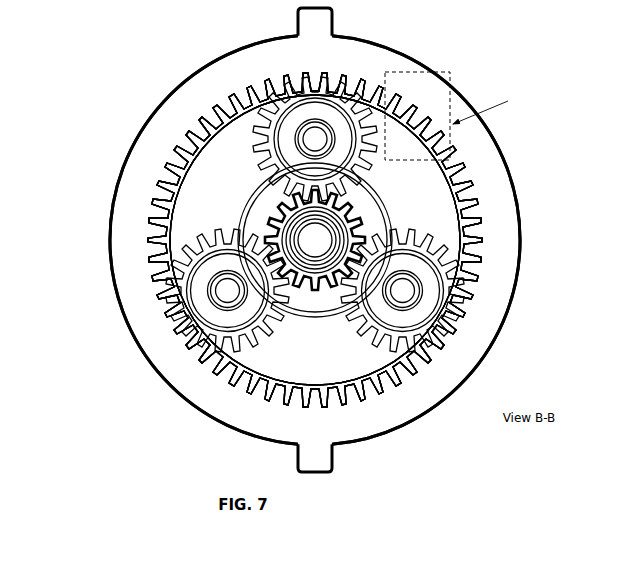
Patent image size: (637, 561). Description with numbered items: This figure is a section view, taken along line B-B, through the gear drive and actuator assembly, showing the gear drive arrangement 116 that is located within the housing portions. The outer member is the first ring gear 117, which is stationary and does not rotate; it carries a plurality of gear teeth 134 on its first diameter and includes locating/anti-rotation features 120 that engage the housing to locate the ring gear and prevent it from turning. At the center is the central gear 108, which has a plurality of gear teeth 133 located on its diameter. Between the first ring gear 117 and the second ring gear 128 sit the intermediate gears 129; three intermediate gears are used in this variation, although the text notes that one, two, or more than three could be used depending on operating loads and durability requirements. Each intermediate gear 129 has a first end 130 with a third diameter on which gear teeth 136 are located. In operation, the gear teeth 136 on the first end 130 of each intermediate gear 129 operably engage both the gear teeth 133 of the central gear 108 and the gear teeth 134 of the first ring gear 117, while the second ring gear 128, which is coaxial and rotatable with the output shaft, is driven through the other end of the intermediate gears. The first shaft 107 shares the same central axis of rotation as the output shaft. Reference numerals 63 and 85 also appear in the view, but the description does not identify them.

The gear drive arrangement 116 is at (117, 121).
The first ring gear 117 is at (198, 91).
The locating/anti-rotation feature 120 is at (294, 16).
The second ring gear 128 is at (158, 178).
The first shaft 107 is at (236, 221).
The intermediate gear 129 is at (178, 257).
The first end 130 is at (172, 288).
The gear teeth 136 is at (166, 313).
The ring gear outer element 63 is at (182, 331).
The gear teeth 134 is at (414, 142).
The gear teeth 133 is at (352, 207).
The central gear 108 is at (364, 233).
The sun gear shaft 85 is at (366, 225).